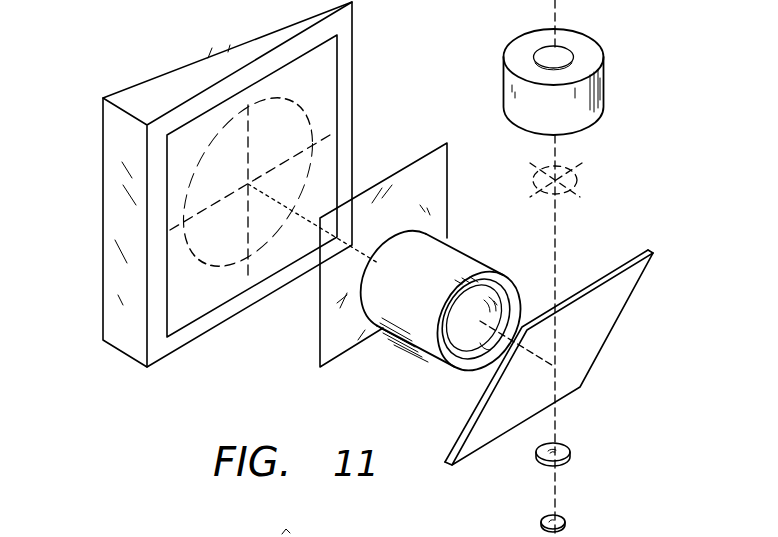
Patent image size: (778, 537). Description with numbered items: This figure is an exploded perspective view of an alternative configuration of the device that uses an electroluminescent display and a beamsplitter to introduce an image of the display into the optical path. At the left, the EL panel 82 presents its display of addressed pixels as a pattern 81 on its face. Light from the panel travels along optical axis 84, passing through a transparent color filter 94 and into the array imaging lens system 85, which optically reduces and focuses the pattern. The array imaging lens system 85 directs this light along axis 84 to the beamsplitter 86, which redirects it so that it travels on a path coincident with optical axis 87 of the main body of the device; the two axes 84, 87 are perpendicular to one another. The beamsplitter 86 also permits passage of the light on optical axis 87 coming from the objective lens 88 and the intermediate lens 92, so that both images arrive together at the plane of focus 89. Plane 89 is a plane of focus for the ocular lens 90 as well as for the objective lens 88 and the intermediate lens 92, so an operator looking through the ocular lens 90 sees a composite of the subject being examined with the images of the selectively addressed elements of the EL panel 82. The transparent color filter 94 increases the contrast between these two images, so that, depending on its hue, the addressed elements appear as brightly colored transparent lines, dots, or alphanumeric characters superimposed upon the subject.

The pattern 81 is at (200, 166).
The EL panel 82 is at (103, 149).
The optical axis 84 is at (312, 222).
The array imaging lens system 85 is at (478, 250).
The beamsplitter 86 is at (628, 307).
The optical axis 87 is at (556, 248).
The objective lens 88 is at (565, 522).
The plane of focus 89 is at (572, 183).
The ocular lens 90 is at (600, 43).
The intermediate lens 92 is at (570, 452).
The transparent color filter 94 is at (320, 306).